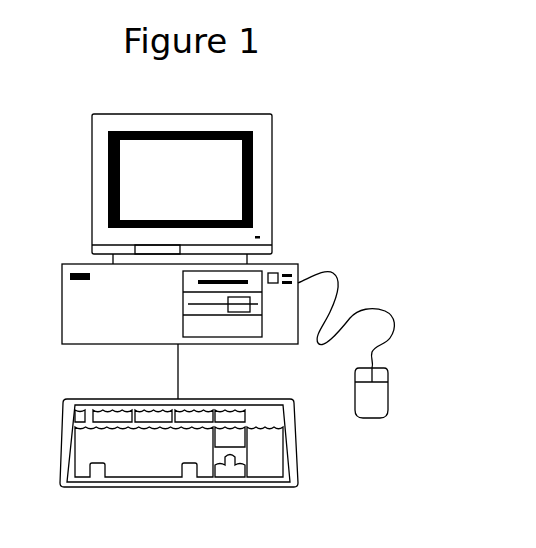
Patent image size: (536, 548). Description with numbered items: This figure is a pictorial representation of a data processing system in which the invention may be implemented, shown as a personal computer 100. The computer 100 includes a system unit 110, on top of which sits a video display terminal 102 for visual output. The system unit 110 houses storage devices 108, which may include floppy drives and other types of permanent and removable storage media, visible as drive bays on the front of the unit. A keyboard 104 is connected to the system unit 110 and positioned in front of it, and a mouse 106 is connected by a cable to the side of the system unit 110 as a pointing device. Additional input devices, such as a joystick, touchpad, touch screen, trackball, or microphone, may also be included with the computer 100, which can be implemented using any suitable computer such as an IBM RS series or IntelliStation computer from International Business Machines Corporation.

The computer 100 is at (369, 226).
The video display terminal 102 is at (272, 159).
The keyboard 104 is at (275, 487).
The mouse 106 is at (390, 382).
The storage devices 108 is at (183, 310).
The system unit 110 is at (276, 344).